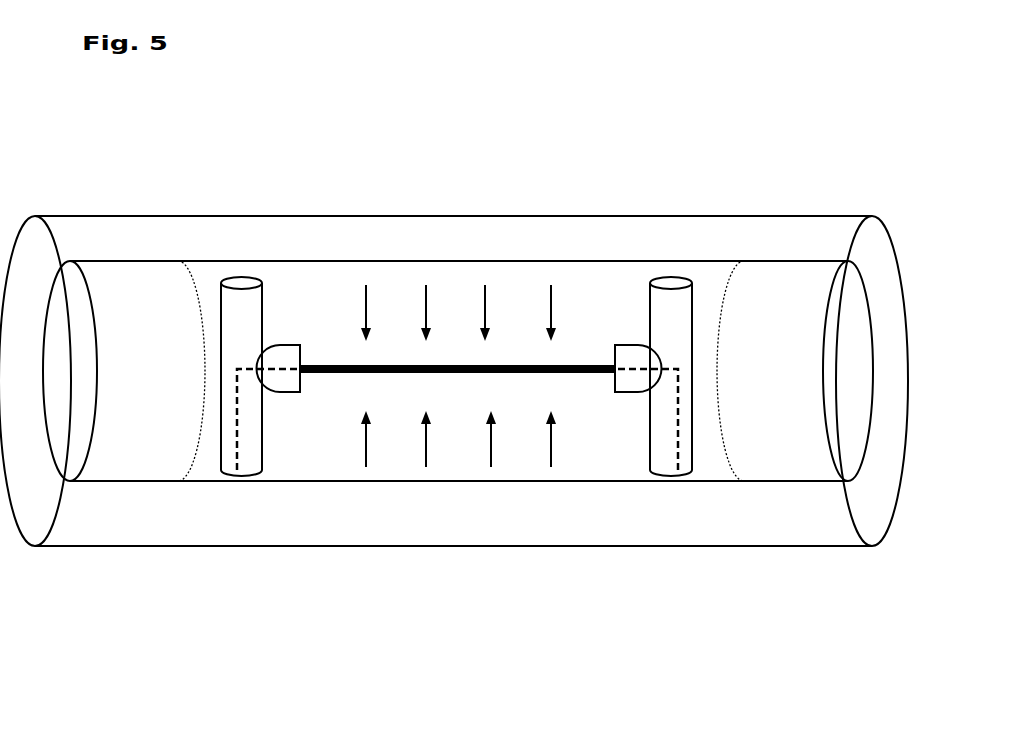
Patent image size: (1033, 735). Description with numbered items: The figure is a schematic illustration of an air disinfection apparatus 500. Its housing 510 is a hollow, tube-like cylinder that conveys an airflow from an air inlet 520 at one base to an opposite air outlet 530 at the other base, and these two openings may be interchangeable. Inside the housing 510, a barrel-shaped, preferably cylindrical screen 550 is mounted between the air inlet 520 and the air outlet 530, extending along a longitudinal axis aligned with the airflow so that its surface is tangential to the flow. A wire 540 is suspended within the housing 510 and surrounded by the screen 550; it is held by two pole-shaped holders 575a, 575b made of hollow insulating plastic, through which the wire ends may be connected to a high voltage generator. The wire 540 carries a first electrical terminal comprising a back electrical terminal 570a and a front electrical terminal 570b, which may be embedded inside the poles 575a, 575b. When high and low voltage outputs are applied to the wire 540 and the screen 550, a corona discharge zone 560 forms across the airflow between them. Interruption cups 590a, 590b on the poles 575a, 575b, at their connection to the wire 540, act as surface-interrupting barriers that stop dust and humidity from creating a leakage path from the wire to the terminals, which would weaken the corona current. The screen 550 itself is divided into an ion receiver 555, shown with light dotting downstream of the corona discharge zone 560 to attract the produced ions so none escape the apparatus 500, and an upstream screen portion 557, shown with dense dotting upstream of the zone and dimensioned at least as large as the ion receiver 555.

The air disinfection apparatus 500 is at (740, 81).
The housing 510 is at (452, 215).
The air inlet 520 is at (16, 425).
The air outlet 530 is at (893, 418).
The wire 540 is at (345, 377).
The screen 550 is at (513, 261).
The ion receiver 555 is at (790, 330).
The upstream screen portion 557 is at (235, 463).
The corona discharge zone 560 is at (387, 292).
The back electrical terminal 570a is at (145, 350).
The front electrical terminal 570b is at (681, 450).
The holder pole 575a is at (220, 370).
The holder pole 575b is at (697, 372).
The interruption cup 590a is at (279, 343).
The interruption cup 590b is at (640, 345).